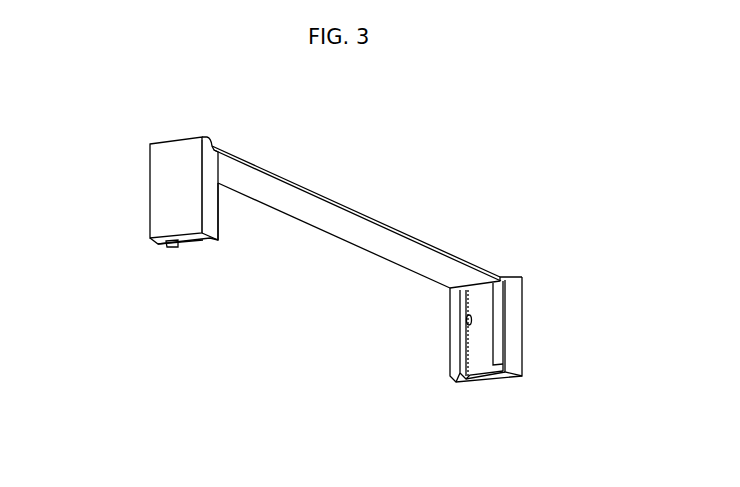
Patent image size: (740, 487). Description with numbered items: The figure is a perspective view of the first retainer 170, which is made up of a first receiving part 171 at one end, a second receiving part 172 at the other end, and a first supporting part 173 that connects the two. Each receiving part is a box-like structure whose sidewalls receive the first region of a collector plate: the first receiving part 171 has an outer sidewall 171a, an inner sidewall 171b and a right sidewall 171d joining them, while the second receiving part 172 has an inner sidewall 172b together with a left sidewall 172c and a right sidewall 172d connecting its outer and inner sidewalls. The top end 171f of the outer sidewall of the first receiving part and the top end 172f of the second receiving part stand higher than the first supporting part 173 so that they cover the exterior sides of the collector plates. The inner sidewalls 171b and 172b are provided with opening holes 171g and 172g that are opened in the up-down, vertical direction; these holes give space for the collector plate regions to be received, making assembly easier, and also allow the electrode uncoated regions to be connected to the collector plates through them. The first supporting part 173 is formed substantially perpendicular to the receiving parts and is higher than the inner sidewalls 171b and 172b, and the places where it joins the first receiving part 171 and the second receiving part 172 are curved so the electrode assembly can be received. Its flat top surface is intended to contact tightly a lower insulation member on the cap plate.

The first retainer 170 is at (357, 201).
The first receiving part 171 is at (155, 163).
The outer sidewall 171a is at (163, 198).
The inner sidewall 171b is at (172, 248).
The right sidewall 171d is at (218, 224).
The top end 171f is at (174, 143).
The opening hole 171g is at (195, 248).
The second receiving part 172 is at (530, 358).
The inner sidewall 172b is at (455, 357).
The left sidewall 172c is at (466, 324).
The right sidewall 172d is at (515, 319).
The top end 172f is at (518, 277).
The opening hole 172g is at (485, 376).
The first supporting part 173 is at (349, 233).